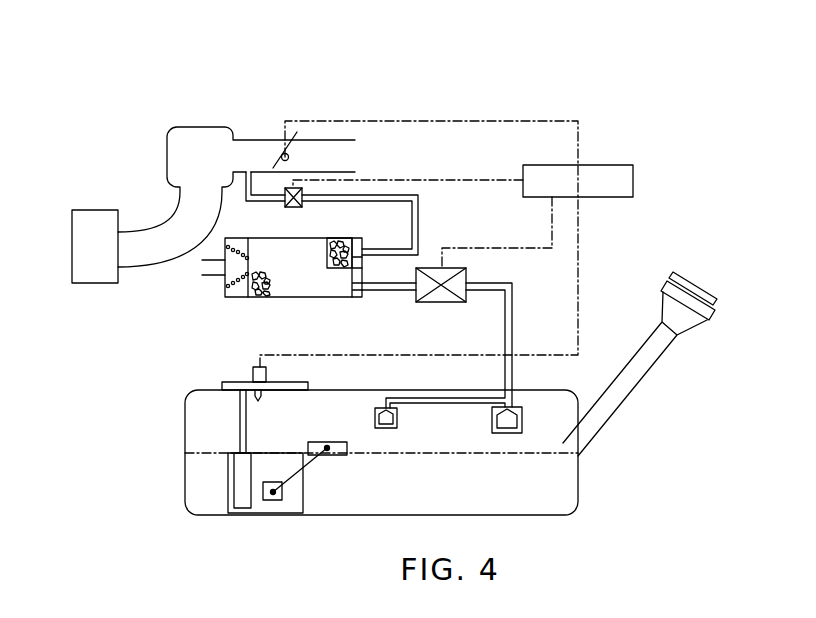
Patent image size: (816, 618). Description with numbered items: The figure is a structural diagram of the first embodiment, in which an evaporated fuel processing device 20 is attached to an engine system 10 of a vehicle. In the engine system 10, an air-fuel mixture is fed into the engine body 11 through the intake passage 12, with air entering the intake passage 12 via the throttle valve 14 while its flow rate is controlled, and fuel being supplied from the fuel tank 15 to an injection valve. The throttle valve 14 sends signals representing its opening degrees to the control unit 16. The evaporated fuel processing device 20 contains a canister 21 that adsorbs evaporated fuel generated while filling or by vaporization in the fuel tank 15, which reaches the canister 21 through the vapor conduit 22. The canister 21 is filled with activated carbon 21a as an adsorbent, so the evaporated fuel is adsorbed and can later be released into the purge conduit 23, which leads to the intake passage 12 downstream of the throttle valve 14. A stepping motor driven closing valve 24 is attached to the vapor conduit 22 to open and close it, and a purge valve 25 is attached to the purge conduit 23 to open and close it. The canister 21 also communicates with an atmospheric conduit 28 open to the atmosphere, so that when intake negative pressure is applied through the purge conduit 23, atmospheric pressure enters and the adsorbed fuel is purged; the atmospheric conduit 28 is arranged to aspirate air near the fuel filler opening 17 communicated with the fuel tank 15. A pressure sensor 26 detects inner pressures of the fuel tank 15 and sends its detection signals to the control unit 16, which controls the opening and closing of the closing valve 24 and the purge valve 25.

The engine system 10 is at (100, 115).
The engine body 11 is at (93, 223).
The intake passage 12 is at (245, 138).
The throttle valve 14 is at (297, 132).
The fuel tank 15 is at (182, 428).
The control unit (ECU) 16 is at (623, 165).
The fuel filler opening 17 is at (705, 322).
The evaporated fuel processing device 20 is at (452, 106).
The canister 21 is at (293, 301).
The activated carbon 21a is at (350, 239).
The vapor conduit 22 is at (515, 309).
The purge conduit 23 is at (422, 212).
The closing valve 24 is at (437, 303).
The purge valve 25 is at (285, 207).
The pressure sensor 26 is at (253, 373).
The atmospheric conduit 28 is at (218, 276).